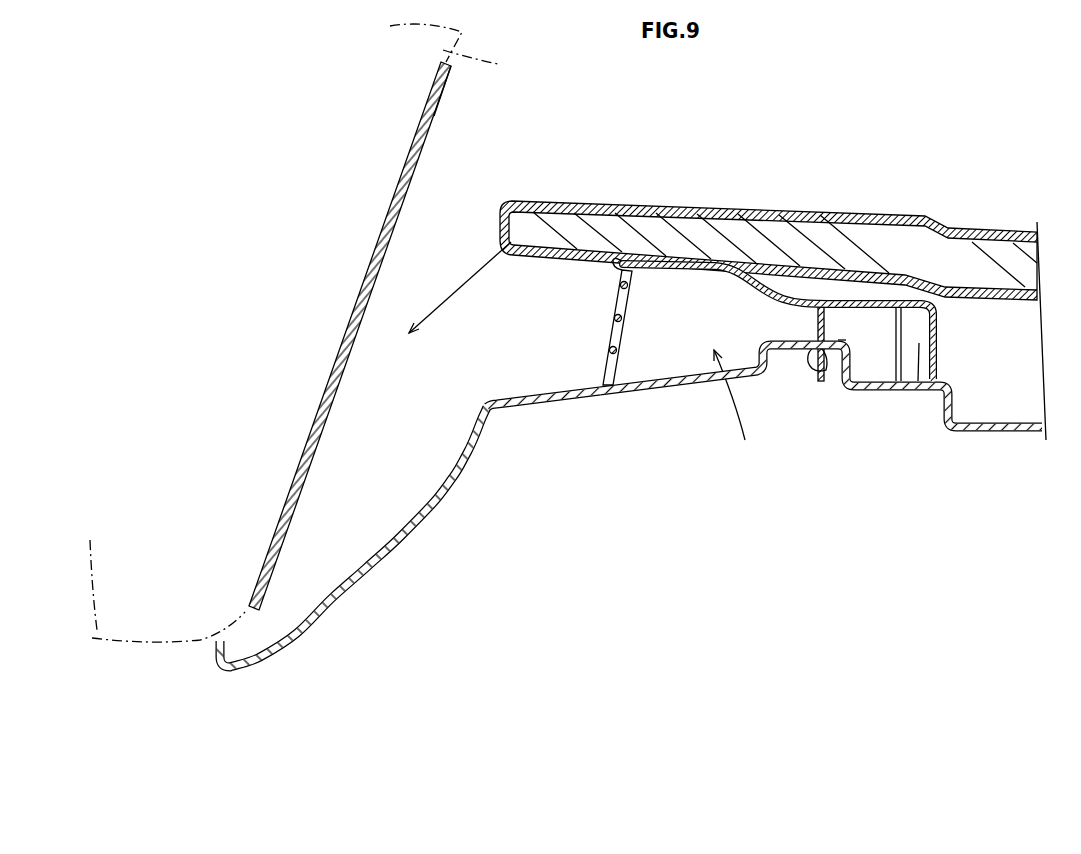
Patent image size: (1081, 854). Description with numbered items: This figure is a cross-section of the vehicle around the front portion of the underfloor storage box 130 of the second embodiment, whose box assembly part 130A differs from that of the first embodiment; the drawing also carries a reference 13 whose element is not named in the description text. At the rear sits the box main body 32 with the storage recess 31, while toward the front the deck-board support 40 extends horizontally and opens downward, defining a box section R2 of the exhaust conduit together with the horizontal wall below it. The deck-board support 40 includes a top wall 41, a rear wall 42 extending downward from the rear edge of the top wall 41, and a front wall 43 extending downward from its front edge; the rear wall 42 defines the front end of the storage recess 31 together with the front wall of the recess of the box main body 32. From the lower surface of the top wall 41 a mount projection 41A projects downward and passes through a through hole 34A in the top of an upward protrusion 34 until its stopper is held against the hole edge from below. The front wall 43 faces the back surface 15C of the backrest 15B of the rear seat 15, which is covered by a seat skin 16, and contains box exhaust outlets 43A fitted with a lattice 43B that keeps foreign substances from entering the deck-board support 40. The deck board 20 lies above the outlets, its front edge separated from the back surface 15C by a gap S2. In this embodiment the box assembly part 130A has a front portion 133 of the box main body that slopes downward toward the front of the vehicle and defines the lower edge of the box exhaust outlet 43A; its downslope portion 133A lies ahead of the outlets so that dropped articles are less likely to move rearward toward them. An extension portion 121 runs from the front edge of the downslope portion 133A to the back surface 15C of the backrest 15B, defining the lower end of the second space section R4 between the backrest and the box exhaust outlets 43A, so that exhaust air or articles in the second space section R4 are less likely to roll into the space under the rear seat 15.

The vehicle door 13 is at (864, 177).
The rear seat 15 is at (441, 25).
The backrest 15B is at (486, 65).
The back surface 15C is at (377, 253).
The seat skin 16 is at (434, 116).
The deck board 20 is at (987, 250).
The storage recess 31 is at (982, 391).
The box main body 32 is at (1022, 437).
The protrusion 34 is at (780, 352).
The through hole 34A is at (823, 345).
The deck-board support 40 is at (787, 282).
The top wall 41 is at (713, 260).
The mount projection 41A is at (819, 364).
The rear wall 42 is at (936, 327).
The front wall 43 is at (618, 388).
The box exhaust outlet 43A is at (617, 264).
The lattice 43B is at (623, 320).
The extension portion 121 is at (428, 530).
The underfloor storage box 130 is at (945, 474).
The box assembly part 130A is at (950, 442).
The front portion 133 is at (690, 374).
The downslope portion 133A is at (538, 400).
The box section R2 is at (733, 405).
The second space section R4 is at (548, 205).
The gap S2 is at (502, 223).